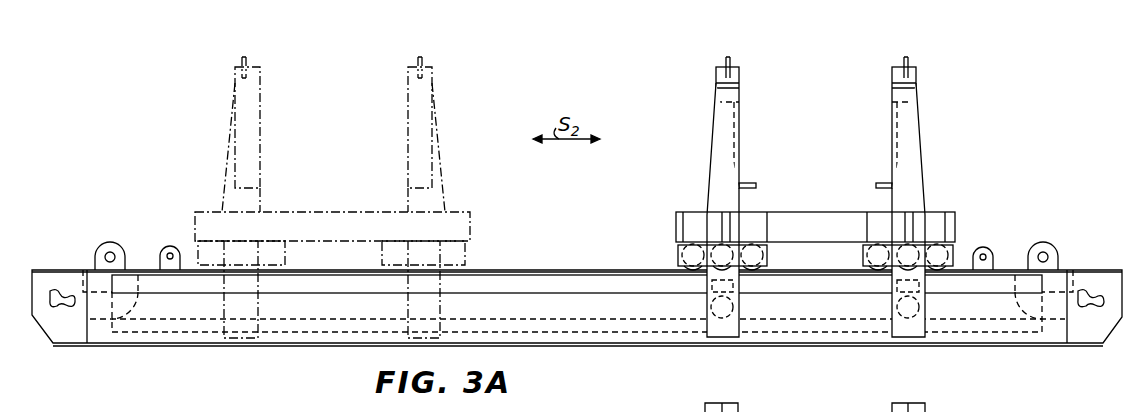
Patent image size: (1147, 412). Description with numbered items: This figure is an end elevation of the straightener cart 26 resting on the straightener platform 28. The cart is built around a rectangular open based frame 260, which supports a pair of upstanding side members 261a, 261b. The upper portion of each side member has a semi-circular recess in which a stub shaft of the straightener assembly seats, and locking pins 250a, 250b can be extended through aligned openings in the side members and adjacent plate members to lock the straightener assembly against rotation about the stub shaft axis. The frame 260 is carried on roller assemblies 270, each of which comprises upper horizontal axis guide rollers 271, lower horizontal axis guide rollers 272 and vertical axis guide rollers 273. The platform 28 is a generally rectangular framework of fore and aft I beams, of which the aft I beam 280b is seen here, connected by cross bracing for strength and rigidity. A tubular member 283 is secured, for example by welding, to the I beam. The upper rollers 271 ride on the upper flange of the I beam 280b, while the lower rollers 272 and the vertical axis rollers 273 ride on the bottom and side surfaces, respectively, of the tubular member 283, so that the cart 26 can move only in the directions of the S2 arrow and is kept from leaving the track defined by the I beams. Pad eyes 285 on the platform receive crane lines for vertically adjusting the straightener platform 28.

The straightener cart 26 is at (815, 197).
The straightener platform 28 is at (978, 345).
The locking pin 250a is at (885, 182).
The locking pin 250b is at (754, 182).
The rectangular open based frame 260 is at (944, 212).
The upstanding side member 261a is at (921, 155).
The upstanding side member 261b is at (712, 152).
The roller assembly 270 is at (815, 248).
The upper horizontal axis guide roller 271 is at (738, 268).
The lower horizontal axis guide roller 272 is at (745, 306).
The vertical axis guide roller 273 is at (745, 287).
The aft I beam 280b is at (490, 271).
The tubular member 283 is at (529, 289).
The pad eye 285 is at (165, 245).